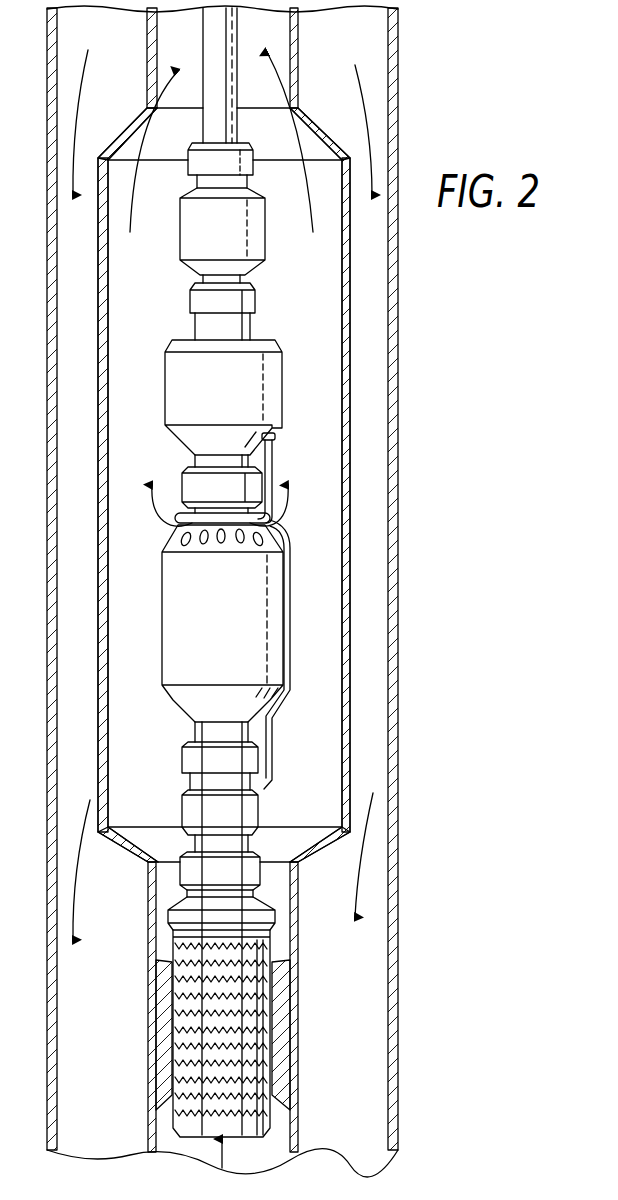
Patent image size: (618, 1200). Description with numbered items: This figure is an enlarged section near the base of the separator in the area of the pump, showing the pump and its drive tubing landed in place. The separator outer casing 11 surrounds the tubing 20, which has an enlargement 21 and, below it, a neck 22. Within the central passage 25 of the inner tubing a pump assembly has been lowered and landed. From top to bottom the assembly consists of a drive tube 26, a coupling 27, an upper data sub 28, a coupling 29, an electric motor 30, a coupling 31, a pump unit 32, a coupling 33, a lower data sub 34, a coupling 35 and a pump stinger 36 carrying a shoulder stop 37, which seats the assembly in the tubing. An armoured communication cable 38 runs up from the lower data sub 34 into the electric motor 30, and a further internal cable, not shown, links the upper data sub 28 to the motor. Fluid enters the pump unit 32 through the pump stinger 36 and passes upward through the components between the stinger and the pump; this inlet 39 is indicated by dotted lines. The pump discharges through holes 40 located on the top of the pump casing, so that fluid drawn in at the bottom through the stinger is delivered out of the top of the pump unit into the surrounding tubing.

The separator outer casing 11 is at (393, 340).
The tubing 20 is at (298, 34).
The enlargement 21 is at (345, 700).
The neck 22 is at (292, 1030).
The central passage 25 is at (172, 50).
The drive tube 26 is at (230, 40).
The coupling 27 is at (212, 167).
The upper data sub 28 is at (253, 247).
The coupling 29 is at (200, 302).
The electric motor 30 is at (270, 383).
The coupling 31 is at (190, 483).
The pump unit 32 is at (255, 620).
The coupling 33 is at (190, 760).
The lower data sub 34 is at (253, 812).
The coupling 35 is at (187, 873).
The pump stinger 36 is at (170, 955).
The shoulder stop 37 is at (270, 918).
The armoured communication cable 38 is at (290, 575).
The inlet 39 is at (207, 813).
The holes 40 is at (237, 546).